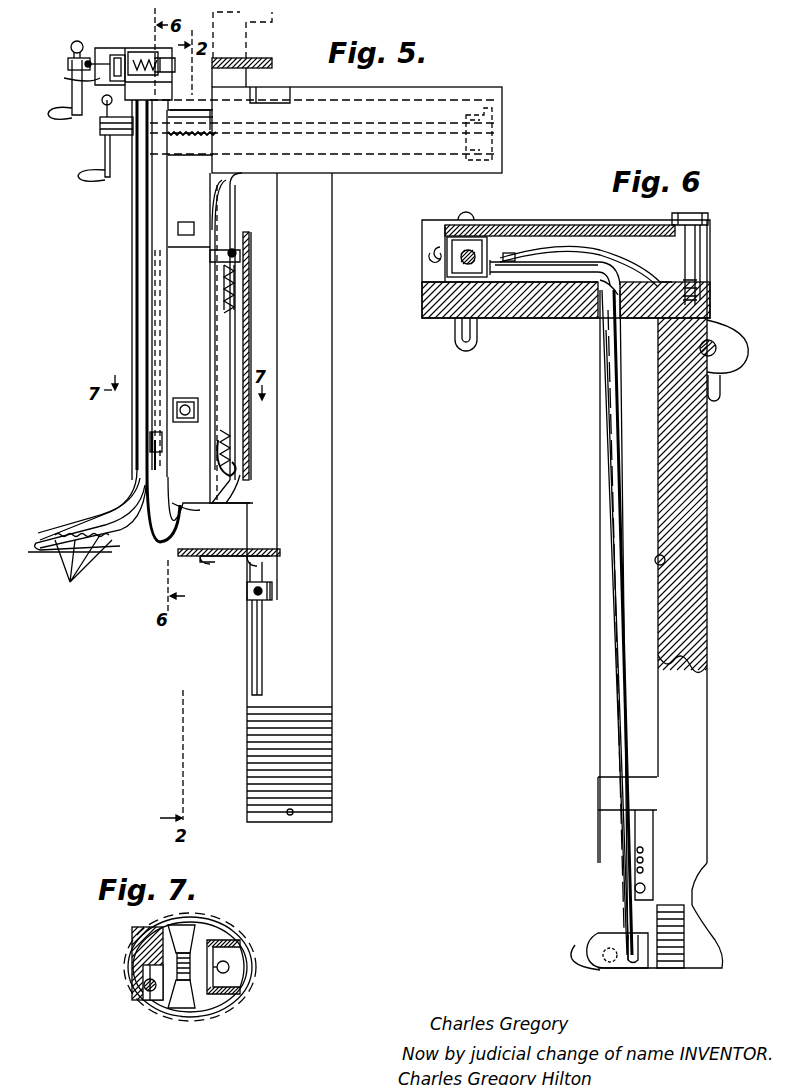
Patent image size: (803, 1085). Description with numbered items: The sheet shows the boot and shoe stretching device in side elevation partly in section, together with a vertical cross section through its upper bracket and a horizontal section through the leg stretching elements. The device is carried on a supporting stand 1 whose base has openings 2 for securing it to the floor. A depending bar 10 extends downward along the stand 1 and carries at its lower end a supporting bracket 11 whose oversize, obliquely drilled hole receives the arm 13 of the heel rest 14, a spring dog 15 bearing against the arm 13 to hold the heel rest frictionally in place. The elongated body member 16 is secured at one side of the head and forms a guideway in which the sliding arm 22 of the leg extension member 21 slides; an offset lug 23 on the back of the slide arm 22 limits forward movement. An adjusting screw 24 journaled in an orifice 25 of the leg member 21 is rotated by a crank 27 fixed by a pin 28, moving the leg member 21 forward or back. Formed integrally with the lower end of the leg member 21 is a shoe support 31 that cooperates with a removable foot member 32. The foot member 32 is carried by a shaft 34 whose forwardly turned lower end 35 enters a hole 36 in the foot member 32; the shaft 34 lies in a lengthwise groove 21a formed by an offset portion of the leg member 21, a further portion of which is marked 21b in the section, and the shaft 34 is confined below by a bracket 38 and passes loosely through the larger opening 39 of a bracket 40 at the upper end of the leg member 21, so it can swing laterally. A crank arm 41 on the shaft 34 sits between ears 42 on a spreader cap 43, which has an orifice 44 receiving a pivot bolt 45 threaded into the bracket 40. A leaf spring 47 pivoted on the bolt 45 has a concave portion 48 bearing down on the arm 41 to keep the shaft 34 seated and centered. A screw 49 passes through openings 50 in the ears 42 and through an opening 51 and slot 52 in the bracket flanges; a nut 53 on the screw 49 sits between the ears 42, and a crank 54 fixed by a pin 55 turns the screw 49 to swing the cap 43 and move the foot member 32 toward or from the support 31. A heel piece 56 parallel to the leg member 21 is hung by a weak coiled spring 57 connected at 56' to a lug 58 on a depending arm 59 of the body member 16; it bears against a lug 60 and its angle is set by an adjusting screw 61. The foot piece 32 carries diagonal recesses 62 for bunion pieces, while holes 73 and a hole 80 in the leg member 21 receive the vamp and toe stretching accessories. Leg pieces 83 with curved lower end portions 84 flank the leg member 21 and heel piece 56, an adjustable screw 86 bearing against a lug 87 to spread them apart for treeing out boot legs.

In FIG. 5, the supporting stand 1 is at (328, 672).
In FIG. 5, the openings 2 is at (290, 815).
In FIG. 5, the depending bar 10 is at (270, 520).
In FIG. 5, the supporting bracket 11 is at (247, 594).
In FIG. 5, the arm 13 is at (252, 640).
In FIG. 5, the heel rest 14 is at (282, 553).
In FIG. 5, the spring dog 15 is at (250, 608).
In FIG. 5, the body member 16 is at (402, 94).
In FIG. 5, the leg extension member 21 is at (132, 238).
In FIG. 6, the leg extension member 21 is at (700, 576).
In FIG. 7, the leg extension member 21 is at (134, 958).
In FIG. 6, the groove 21a is at (602, 654).
In FIG. 6, the tube portion 21b is at (660, 598).
In FIG. 5, the sliding arm 22 is at (186, 152).
In FIG. 5, the offset lug 23 is at (484, 108).
In FIG. 5, the adjusting screw 24 is at (180, 160).
In FIG. 6, the adjusting screw 24 is at (716, 344).
In FIG. 6, the orifice 25 is at (735, 372).
In FIG. 5, the crank 27 is at (98, 180).
In FIG. 6, the crank 27 is at (720, 428).
In FIG. 5, the pin 28 is at (100, 135).
In FIG. 6, the shoe support 31 is at (726, 956).
In FIG. 5, the foot member 32 is at (44, 553).
In FIG. 6, the foot member 32 is at (596, 942).
In FIG. 5, the shaft 34 is at (150, 446).
In FIG. 6, the shaft 34 is at (620, 730).
In FIG. 7, the shaft 34 is at (143, 985).
In FIG. 5, the forwardly turned lower end 35 is at (100, 510).
In FIG. 6, the forwardly turned lower end 35 is at (632, 963).
In FIG. 5, the hole 36 is at (90, 528).
In FIG. 5, the bracket 38 is at (150, 438).
In FIG. 6, the bracket 38 is at (598, 790).
In FIG. 7, the bracket 38 is at (150, 995).
In FIG. 6, the opening 39 is at (605, 300).
In FIG. 5, the bracket 40 is at (160, 86).
In FIG. 6, the bracket 40 is at (430, 312).
In FIG. 6, the crank arm 41 is at (572, 280).
In FIG. 5, the ears 42 is at (116, 56).
In FIG. 6, the ears 42 is at (455, 268).
In FIG. 5, the spreader cap 43 is at (140, 52).
In FIG. 6, the spreader cap 43 is at (522, 230).
In FIG. 6, the orifice 44 is at (672, 218).
In FIG. 6, the pivot bolt 45 is at (705, 252).
In FIG. 6, the leaf spring 47 is at (628, 252).
In FIG. 6, the concave portion 48 is at (508, 252).
In FIG. 5, the screw 49 is at (68, 80).
In FIG. 6, the screw 49 is at (432, 252).
In FIG. 5, the openings 50 is at (152, 55).
In FIG. 5, the opening 51 is at (178, 48).
In FIG. 6, the slot 52 is at (460, 256).
In FIG. 5, the nut 53 is at (72, 46).
In FIG. 6, the nut 53 is at (430, 285).
In FIG. 5, the crank 54 is at (62, 110).
In FIG. 5, the pin 55 is at (70, 62).
In FIG. 5, the heel piece 56 is at (252, 484).
In FIG. 7, the heel piece 56 is at (248, 967).
In FIG. 7, the connection 56' is at (261, 981).
In FIG. 5, the coiled spring 57 is at (248, 332).
In FIG. 7, the coiled spring 57 is at (229, 968).
In FIG. 5, the lug 58 is at (238, 268).
In FIG. 5, the depending arm 59 is at (232, 222).
In FIG. 5, the lug 60 is at (262, 95).
In FIG. 5, the adjusting screw 61 is at (238, 250).
In FIG. 5, the recesses 62 is at (83, 572).
In FIG. 6, the holes 73 is at (648, 868).
In FIG. 6, the hole 80 is at (634, 888).
In FIG. 5, the leg pieces 83 is at (178, 300).
In FIG. 7, the leg pieces 83 is at (192, 935).
In FIG. 5, the curved lower end portions 84 is at (160, 540).
In FIG. 7, the adjustable screw 86 is at (178, 1020).
In FIG. 5, the lug 87 is at (188, 422).
In FIG. 7, the lug 87 is at (187, 940).